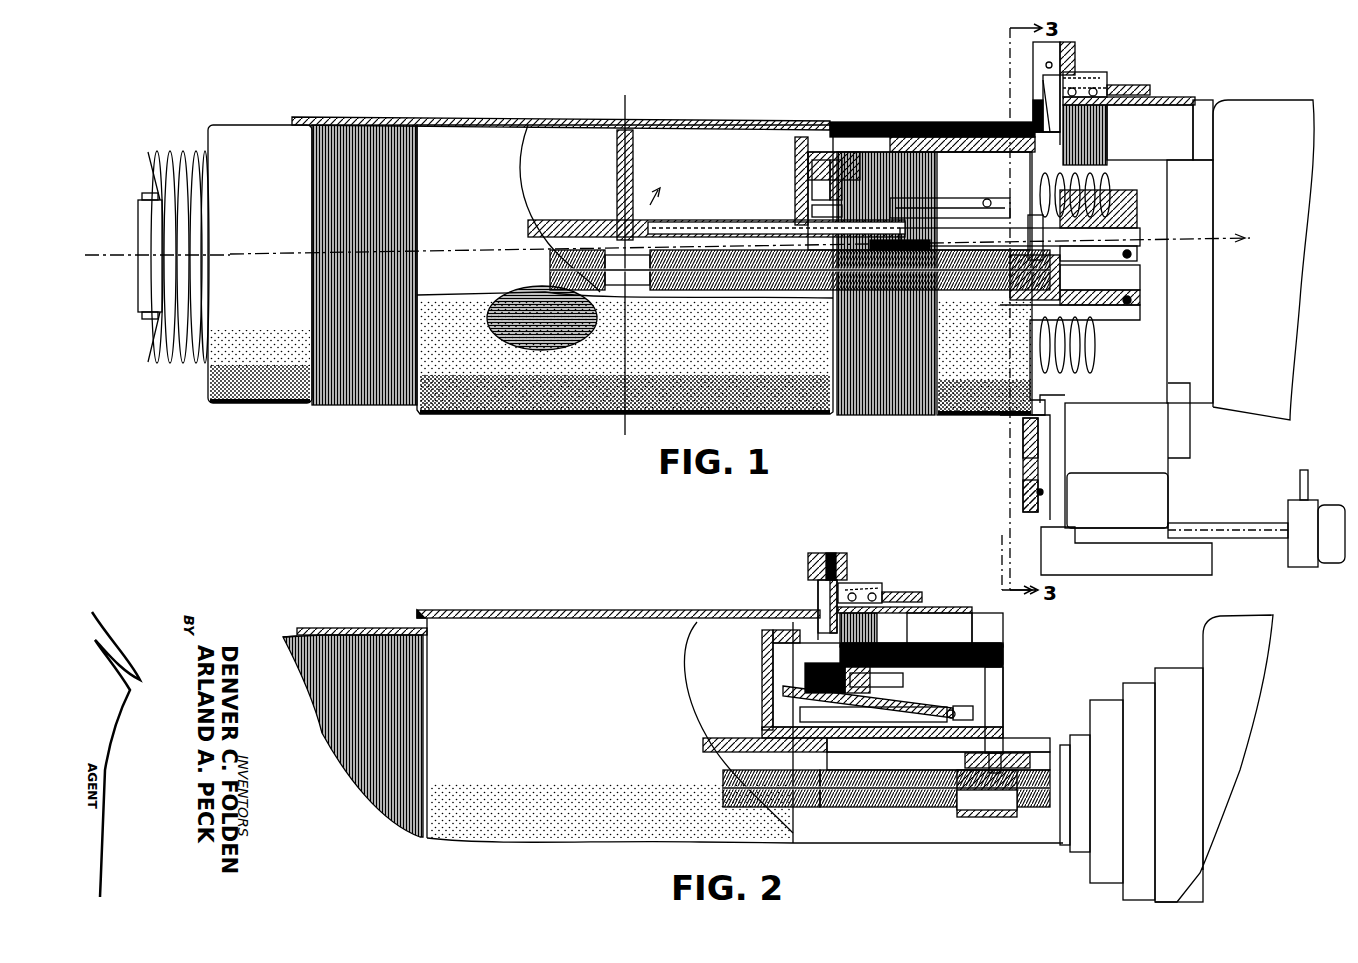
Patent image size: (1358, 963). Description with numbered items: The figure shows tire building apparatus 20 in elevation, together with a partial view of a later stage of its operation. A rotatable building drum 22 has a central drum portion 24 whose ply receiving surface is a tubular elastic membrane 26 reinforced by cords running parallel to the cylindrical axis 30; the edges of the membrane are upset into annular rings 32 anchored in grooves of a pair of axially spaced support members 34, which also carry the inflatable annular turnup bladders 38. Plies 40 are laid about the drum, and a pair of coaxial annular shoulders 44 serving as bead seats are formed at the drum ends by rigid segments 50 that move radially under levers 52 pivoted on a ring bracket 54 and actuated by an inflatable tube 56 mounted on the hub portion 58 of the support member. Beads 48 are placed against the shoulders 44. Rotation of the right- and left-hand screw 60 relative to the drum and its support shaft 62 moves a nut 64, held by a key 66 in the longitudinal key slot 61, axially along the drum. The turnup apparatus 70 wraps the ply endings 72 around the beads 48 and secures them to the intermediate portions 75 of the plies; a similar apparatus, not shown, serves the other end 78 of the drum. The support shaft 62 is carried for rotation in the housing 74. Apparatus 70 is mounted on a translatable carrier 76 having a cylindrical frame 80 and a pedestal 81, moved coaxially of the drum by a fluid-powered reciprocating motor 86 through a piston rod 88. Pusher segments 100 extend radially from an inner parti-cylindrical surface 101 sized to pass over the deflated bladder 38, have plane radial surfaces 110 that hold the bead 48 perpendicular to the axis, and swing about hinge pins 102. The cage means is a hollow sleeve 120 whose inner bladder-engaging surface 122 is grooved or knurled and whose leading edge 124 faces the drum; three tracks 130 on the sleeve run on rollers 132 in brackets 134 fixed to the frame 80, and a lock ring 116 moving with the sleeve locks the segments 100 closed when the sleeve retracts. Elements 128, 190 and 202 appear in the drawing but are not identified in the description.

In FIG. 1, the tire building apparatus 20 is at (525, 120).
In FIG. 2, the tire building apparatus 20 is at (650, 610).
In FIG. 1, the rotatable building drum 22 is at (487, 410).
In FIG. 2, the rotatable building drum 22 is at (514, 612).
In FIG. 1, the central drum portion 24 is at (560, 412).
In FIG. 2, the central drum portion 24 is at (522, 820).
In FIG. 1, the tubular elastic membrane 26 is at (533, 140).
In FIG. 2, the tubular elastic membrane 26 is at (655, 618).
In FIG. 1, the cylindrical axis 30 is at (103, 256).
In FIG. 2, the cylindrical axis 30 is at (825, 808).
In FIG. 1, the annular rings 32 is at (810, 163).
In FIG. 2, the annular rings 32 is at (800, 676).
In FIG. 1, the support members 34 is at (810, 205).
In FIG. 2, the support members 34 is at (800, 685).
In FIG. 1, the inflatable annular turnup bladders 38 is at (320, 405).
In FIG. 2, the inflatable annular turnup bladders 38 is at (300, 666).
In FIG. 1, the plies 40 is at (440, 119).
In FIG. 2, the plies 40 is at (335, 628).
In FIG. 2, the annular shoulders 44 is at (445, 622).
In FIG. 1, the bead assemblies 48 is at (1035, 118).
In FIG. 2, the bead assemblies 48 is at (415, 612).
In FIG. 1, the rigid segments 50 is at (800, 180).
In FIG. 2, the rigid segments 50 is at (775, 648).
In FIG. 1, the levers 52 is at (930, 217).
In FIG. 2, the levers 52 is at (920, 716).
In FIG. 1, the ring bracket 54 is at (985, 198).
In FIG. 2, the ring bracket 54 is at (975, 712).
In FIG. 1, the annular inflatable tube 56 is at (960, 250).
In FIG. 2, the annular inflatable tube 56 is at (800, 712).
In FIG. 1, the hub portion 58 is at (1140, 222).
In FIG. 2, the hub portion 58 is at (890, 770).
In FIG. 1, the right- and left-hand screw 60 is at (545, 255).
In FIG. 2, the right- and left-hand screw 60 is at (937, 808).
In FIG. 1, the longitudinal key slot 61 is at (800, 240).
In FIG. 2, the longitudinal key slot 61 is at (860, 752).
In FIG. 1, the support shaft 62 is at (565, 218).
In FIG. 2, the support shaft 62 is at (705, 747).
In FIG. 1, the nut 64 is at (1060, 298).
In FIG. 2, the nut 64 is at (982, 812).
In FIG. 2, the key 66 is at (1003, 745).
In FIG. 1, the bladder turnup apparatus 70 is at (1163, 60).
In FIG. 2, the bladder turnup apparatus 70 is at (988, 632).
In FIG. 1, the ply endings 72 is at (305, 117).
In FIG. 2, the ply endings 72 is at (290, 632).
In FIG. 1, the housing 74 is at (1293, 258).
In FIG. 2, the housing 74 is at (1210, 812).
In FIG. 2, the intermediate portions of the plies 75 is at (600, 610).
In FIG. 1, the translatable carrier 76 is at (1190, 450).
In FIG. 1, the other end of the drum 78 is at (208, 135).
In FIG. 1, the cylindrical frame 80 is at (1115, 86).
In FIG. 2, the cylindrical frame 80 is at (905, 595).
In FIG. 1, the pedestal 81 is at (1175, 575).
In FIG. 1, the fluid-powered reciprocating motor 86 is at (1292, 510).
In FIG. 1, the piston rod 88 is at (1255, 538).
In FIG. 1, the pusher segments 100 is at (1040, 65).
In FIG. 1, the inner parti-cylindrical surface 101 is at (1030, 428).
In FIG. 1, the hinge pins 102 is at (1045, 491).
In FIG. 2, the hinge pins 102 is at (832, 555).
In FIG. 1, the plane radial surface 110 is at (1045, 100).
In FIG. 2, the plane radial surface 110 is at (822, 605).
In FIG. 1, the lock ring 116 is at (1023, 505).
In FIG. 2, the lock ring 116 is at (818, 553).
In FIG. 1, the hollow circular sleeve 120 is at (1205, 100).
In FIG. 2, the hollow circular sleeve 120 is at (975, 638).
In FIG. 1, the inner bladder engaging surface 122 is at (1095, 150).
In FIG. 2, the inner bladder engaging surface 122 is at (878, 627).
In FIG. 1, the leading edge 124 is at (1040, 133).
In FIG. 1, the housing box 128 is at (1195, 132).
In FIG. 2, the housing box 128 is at (952, 628).
In FIG. 1, the tracks 130 is at (1175, 97).
In FIG. 1, the rollers 132 is at (1090, 72).
In FIG. 2, the rollers 132 is at (880, 588).
In FIG. 2, the bracket 134 is at (855, 585).
In FIG. 1, the gap 190 is at (660, 218).
In FIG. 1, the section line 202 is at (620, 97).